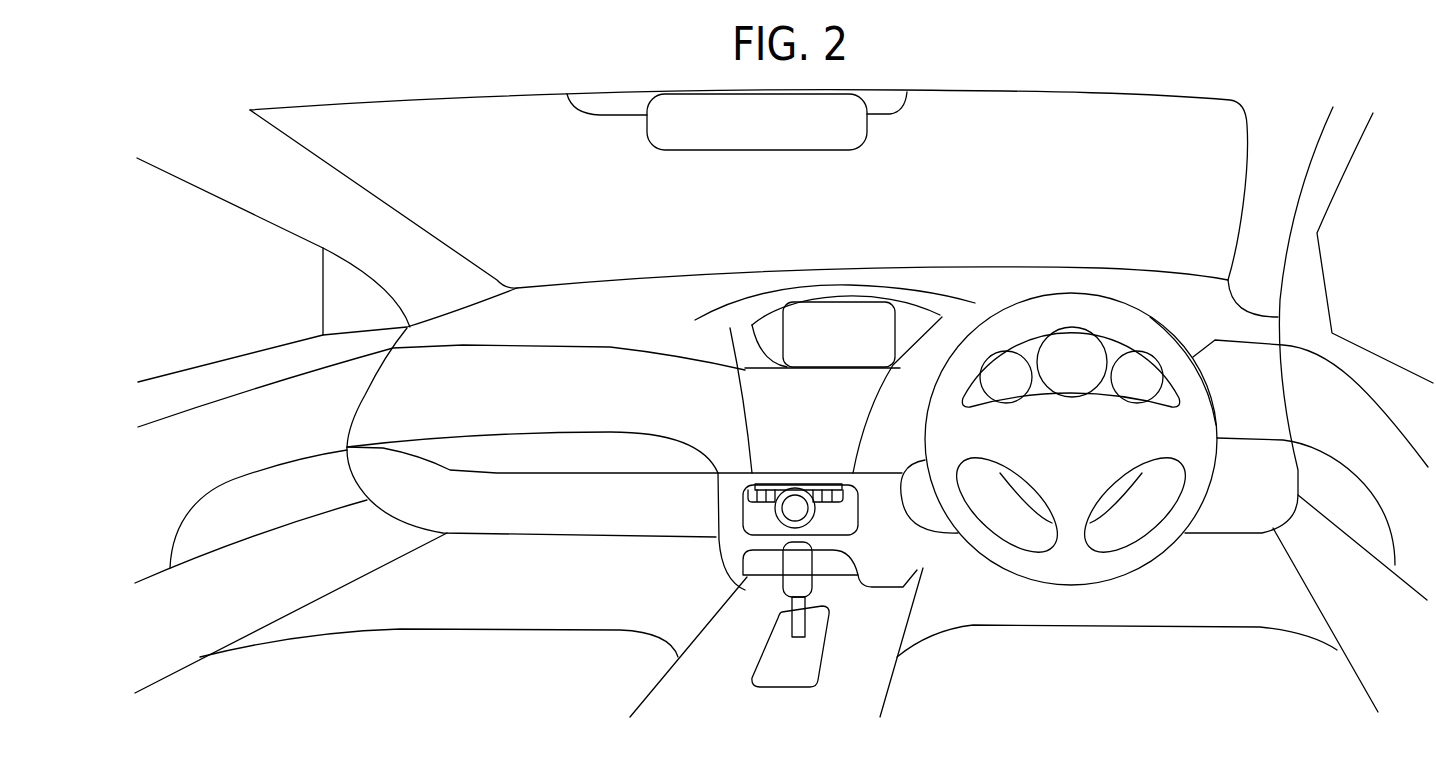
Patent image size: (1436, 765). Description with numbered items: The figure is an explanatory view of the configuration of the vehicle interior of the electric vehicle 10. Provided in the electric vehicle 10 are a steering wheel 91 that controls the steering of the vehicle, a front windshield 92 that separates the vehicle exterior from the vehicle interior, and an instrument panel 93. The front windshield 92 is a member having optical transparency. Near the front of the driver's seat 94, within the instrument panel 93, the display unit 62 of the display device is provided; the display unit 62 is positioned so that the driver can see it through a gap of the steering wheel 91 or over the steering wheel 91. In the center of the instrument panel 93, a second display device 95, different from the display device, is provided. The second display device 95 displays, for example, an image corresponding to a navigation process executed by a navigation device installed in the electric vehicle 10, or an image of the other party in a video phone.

The electric vehicle 10 is at (667, 597).
The display unit 62 is at (1063, 358).
The steering wheel 91 is at (1059, 410).
The front windshield 92 is at (847, 219).
The instrument panel 93 is at (690, 309).
The driver's seat 94 is at (1143, 689).
The second display device 95 is at (855, 344).